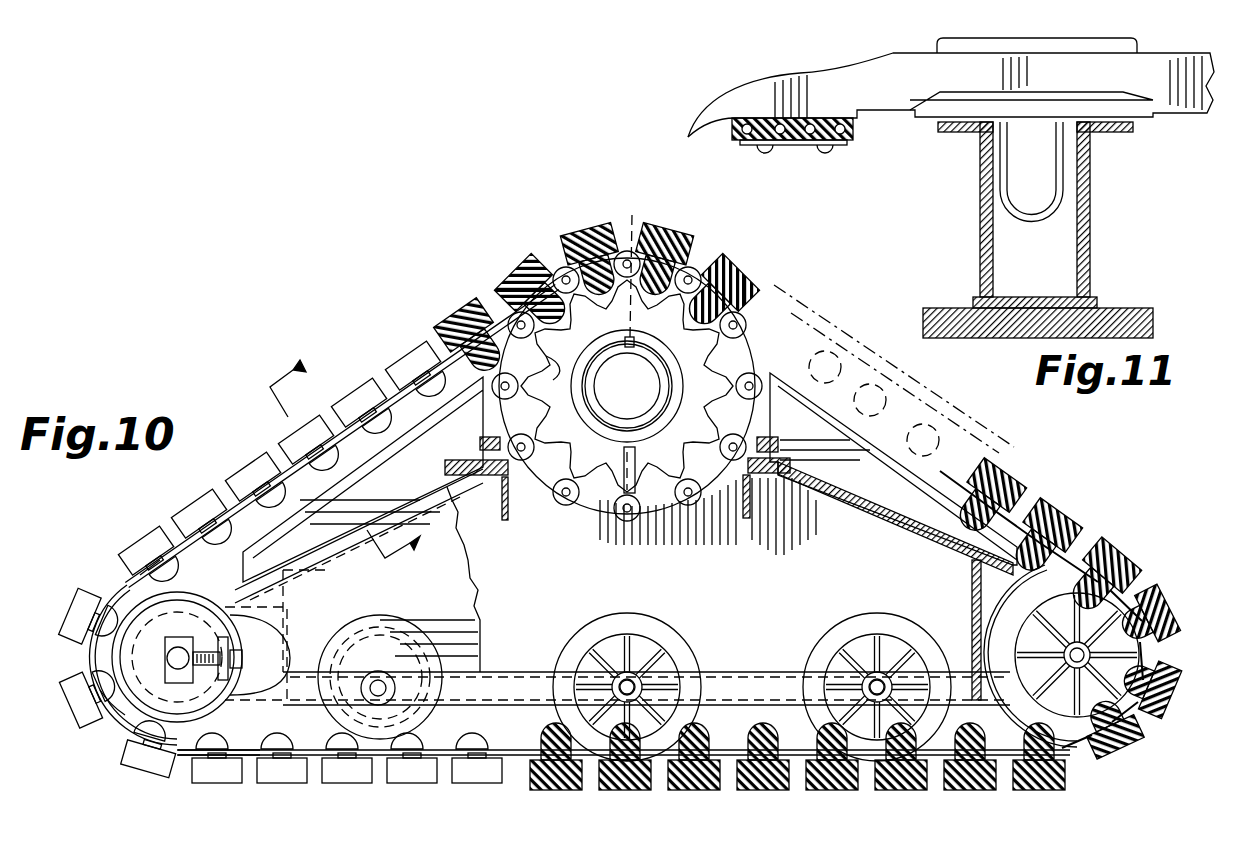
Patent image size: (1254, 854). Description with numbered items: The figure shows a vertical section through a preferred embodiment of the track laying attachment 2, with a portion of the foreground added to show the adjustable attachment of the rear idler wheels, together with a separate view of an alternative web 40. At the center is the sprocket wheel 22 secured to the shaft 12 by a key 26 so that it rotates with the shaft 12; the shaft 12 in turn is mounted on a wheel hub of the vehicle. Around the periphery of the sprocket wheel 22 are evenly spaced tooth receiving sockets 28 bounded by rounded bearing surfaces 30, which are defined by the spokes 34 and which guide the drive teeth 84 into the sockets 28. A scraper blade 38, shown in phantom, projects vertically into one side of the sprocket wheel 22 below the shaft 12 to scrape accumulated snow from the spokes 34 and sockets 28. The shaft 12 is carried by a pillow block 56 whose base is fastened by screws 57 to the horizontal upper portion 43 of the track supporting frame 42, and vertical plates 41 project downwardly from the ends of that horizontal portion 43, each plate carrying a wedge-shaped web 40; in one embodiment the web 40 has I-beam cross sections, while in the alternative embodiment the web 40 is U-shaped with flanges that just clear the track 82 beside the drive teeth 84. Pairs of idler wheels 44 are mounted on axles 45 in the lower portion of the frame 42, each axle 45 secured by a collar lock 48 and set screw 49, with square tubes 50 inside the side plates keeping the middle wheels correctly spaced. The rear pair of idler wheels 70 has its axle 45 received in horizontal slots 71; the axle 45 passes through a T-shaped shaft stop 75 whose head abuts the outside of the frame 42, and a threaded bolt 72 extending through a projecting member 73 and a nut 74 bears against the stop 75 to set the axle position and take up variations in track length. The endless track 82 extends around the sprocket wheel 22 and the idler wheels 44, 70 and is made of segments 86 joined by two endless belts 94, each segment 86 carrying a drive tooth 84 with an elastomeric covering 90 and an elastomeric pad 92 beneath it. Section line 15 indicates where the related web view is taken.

In FIG. 10, the track laying attachment 2 is at (478, 268).
In FIG. 10, the shaft 12 is at (657, 350).
In FIG. 10, the section line 15 is at (356, 455).
In FIG. 10, the sprocket wheel 22 is at (703, 272).
In FIG. 10, the key 26 is at (630, 261).
In FIG. 10, the tooth receiving sockets 28 is at (758, 350).
In FIG. 10, the bearing surfaces 30 is at (741, 432).
In FIG. 10, the spokes 34 is at (545, 356).
In FIG. 10, the scraper blades 38 is at (622, 493).
In FIG. 10, the web 40 is at (845, 466).
In FIG. 11, the web 40 is at (980, 236).
In FIG. 10, the vertical plates 41 is at (755, 518).
In FIG. 10, the track supporting frame 42 is at (445, 582).
In FIG. 11, the track supporting frame 42 is at (1145, 308).
In FIG. 10, the horizontal upper portion 43 is at (476, 494).
In FIG. 10, the idler wheels 44 is at (640, 618).
In FIG. 10, the axle 45 is at (620, 680).
In FIG. 10, the collar lock 48 is at (135, 615).
In FIG. 10, the set screw 49 is at (148, 570).
In FIG. 10, the tubes 50 is at (508, 672).
In FIG. 10, the pillow block 56 is at (752, 505).
In FIG. 10, the screws 57 is at (785, 476).
In FIG. 10, the rear pair of idler wheels 70 is at (100, 656).
In FIG. 10, the slots 71 is at (161, 660).
In FIG. 10, the threaded bolt 72 is at (200, 650).
In FIG. 10, the projecting member 73 is at (292, 610).
In FIG. 10, the nut 74 is at (188, 760).
In FIG. 10, the T-shaped shaft stop 75 is at (128, 725).
In FIG. 10, the endless track 82 is at (1040, 790).
In FIG. 10, the drive tooth 84 is at (752, 730).
In FIG. 11, the drive tooth 84 is at (1062, 170).
In FIG. 10, the segments 86 is at (600, 790).
In FIG. 11, the segments 86 is at (715, 110).
In FIG. 10, the elastomeric covering 90 is at (786, 730).
In FIG. 10, the elastomeric pad 92 is at (412, 795).
In FIG. 11, the elastomeric pad 92 is at (937, 50).
In FIG. 11, the endless belts 94 is at (853, 130).